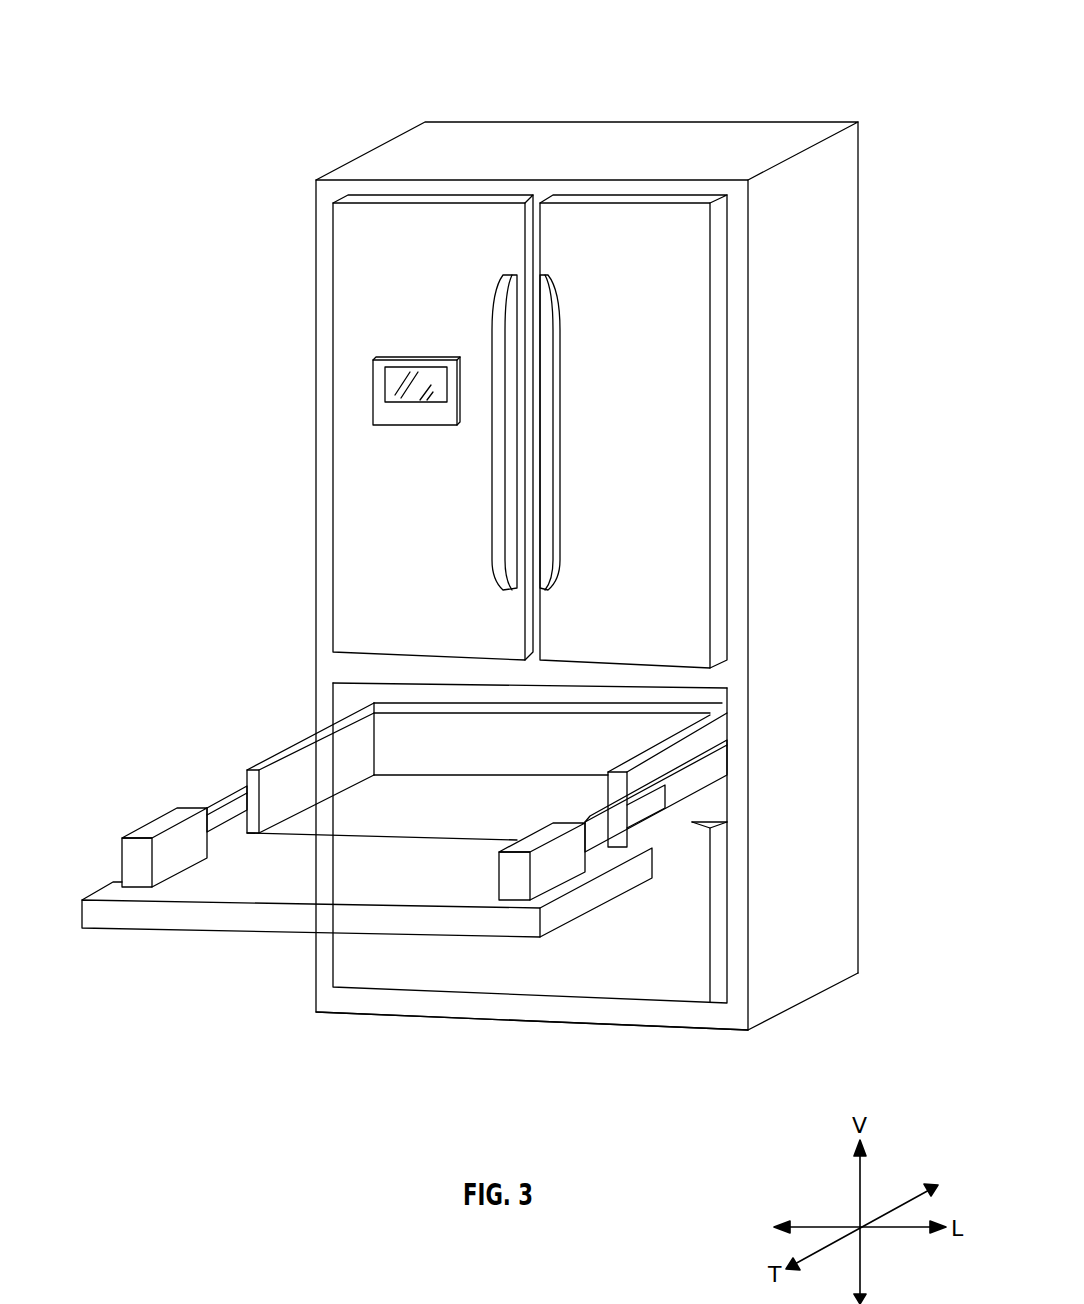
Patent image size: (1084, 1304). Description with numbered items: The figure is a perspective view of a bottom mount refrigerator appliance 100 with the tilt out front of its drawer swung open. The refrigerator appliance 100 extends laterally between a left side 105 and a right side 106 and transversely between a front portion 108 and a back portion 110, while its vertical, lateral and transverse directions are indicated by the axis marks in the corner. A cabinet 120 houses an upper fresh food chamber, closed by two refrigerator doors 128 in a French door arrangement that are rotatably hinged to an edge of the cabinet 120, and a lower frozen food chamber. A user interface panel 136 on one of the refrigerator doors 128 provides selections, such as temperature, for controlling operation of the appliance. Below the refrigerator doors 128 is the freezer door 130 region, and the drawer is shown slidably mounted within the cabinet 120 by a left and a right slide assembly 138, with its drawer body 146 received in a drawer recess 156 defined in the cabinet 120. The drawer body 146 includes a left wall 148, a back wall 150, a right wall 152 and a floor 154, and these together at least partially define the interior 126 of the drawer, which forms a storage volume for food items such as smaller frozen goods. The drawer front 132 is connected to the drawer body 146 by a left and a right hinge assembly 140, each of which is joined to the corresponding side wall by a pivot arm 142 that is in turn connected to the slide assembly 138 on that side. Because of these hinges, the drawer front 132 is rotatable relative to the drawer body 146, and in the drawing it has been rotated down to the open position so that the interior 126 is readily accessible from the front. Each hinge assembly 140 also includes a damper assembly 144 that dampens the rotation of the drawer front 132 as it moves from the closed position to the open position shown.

The refrigerator appliance 100 is at (780, 75).
The left side 105 is at (452, 118).
The right side 106 is at (862, 112).
The front portion 108 is at (752, 1038).
The back portion 110 is at (870, 982).
The cabinet 120 is at (845, 848).
The interior 126 is at (663, 730).
The refrigerator doors 128 is at (683, 355).
The freezer door 130 is at (510, 963).
The drawer front 132 is at (160, 915).
The user interface panel 136 is at (415, 362).
The slide assembly 138 is at (700, 785).
The hinge assembly 140 is at (195, 790).
The pivot arm 142 is at (232, 803).
The damper assembly 144 is at (130, 858).
The drawer body 146 is at (292, 730).
The left wall 148 is at (335, 784).
The back wall 150 is at (515, 759).
The right wall 152 is at (710, 752).
The floor 154 is at (465, 823).
The drawer recess 156 is at (612, 698).